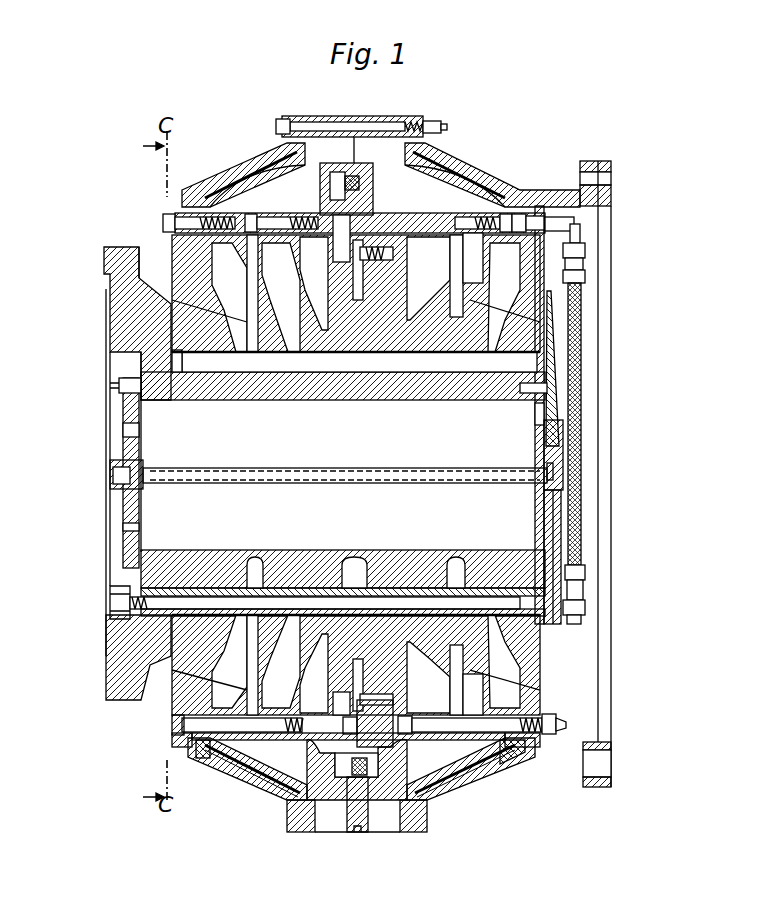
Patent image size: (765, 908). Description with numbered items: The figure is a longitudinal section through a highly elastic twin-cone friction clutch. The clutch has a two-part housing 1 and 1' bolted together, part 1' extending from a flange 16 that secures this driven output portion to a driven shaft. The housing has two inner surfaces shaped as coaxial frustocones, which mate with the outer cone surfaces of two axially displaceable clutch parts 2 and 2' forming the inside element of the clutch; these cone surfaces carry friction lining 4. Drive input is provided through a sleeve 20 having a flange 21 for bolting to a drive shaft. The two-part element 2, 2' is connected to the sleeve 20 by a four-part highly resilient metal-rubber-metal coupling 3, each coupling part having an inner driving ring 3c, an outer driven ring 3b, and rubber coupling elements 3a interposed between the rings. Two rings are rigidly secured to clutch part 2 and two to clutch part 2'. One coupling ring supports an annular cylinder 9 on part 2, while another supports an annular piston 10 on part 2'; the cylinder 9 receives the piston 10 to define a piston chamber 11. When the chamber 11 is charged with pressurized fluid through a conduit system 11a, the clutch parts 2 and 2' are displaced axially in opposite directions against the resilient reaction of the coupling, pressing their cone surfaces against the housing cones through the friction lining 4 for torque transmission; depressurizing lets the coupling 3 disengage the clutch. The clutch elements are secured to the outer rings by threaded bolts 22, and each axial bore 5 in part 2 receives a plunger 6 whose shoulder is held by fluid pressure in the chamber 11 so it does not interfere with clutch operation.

The housing part 1 is at (356, 835).
The housing part 1' is at (471, 804).
The clutch part 2 is at (247, 780).
The clutch part 2' is at (517, 781).
The resilient coupling 3 is at (383, 678).
The rubber coupling elements 3a is at (175, 733).
The outer driven ring 3b is at (545, 688).
The inner driving ring 3c is at (415, 620).
The friction lining 4 is at (470, 775).
The bore 5 is at (226, 748).
The plunger 6 is at (203, 745).
The cylinder 9 is at (358, 785).
The piston 10 is at (386, 745).
The piston chamber 11 is at (341, 770).
The conduit system 11a is at (385, 212).
The flange 16 is at (611, 194).
The sleeve 20 is at (150, 575).
The flange 21 is at (122, 302).
The threaded bolts 22 is at (165, 222).